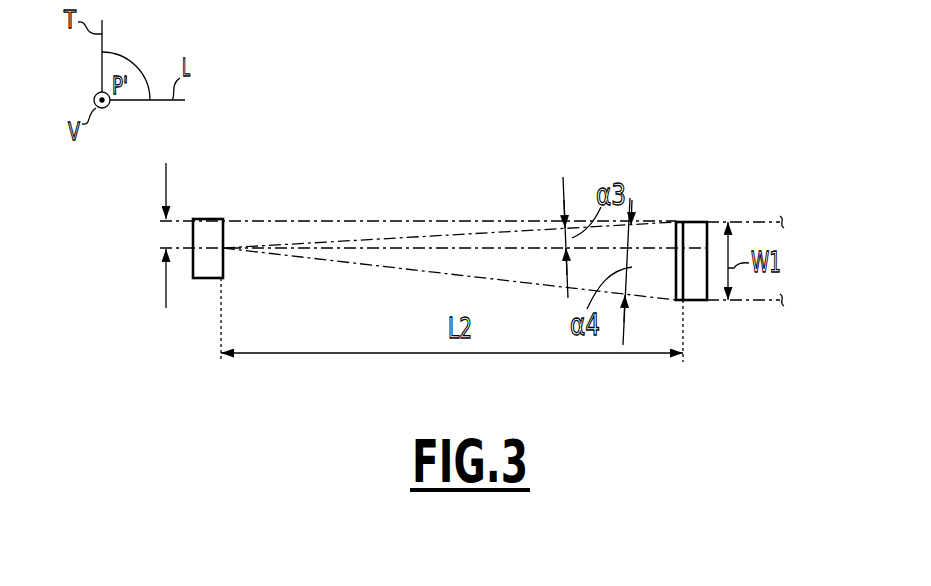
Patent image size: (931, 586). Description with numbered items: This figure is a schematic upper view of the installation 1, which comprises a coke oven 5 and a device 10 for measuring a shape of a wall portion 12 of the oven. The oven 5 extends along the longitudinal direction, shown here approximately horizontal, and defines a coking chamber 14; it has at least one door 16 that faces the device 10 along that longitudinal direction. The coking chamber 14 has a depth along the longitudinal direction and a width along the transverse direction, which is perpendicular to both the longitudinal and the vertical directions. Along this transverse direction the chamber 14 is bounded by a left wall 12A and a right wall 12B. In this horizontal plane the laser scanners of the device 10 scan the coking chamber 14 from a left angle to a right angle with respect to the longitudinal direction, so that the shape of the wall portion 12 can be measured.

The installation 1 is at (765, 130).
The coke oven 5 is at (705, 240).
The device for measuring a shape of a wall portion 10 is at (178, 190).
The wall portion 12 is at (780, 262).
The left wall 12A is at (748, 220).
The right wall 12B is at (752, 302).
The coking chamber 14 is at (750, 286).
The door 16 is at (677, 288).